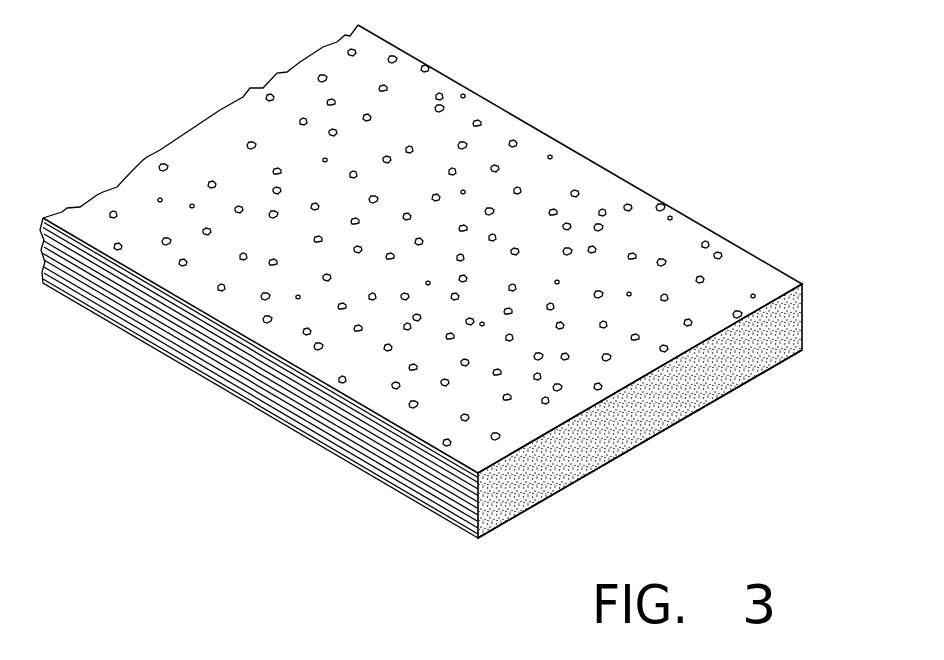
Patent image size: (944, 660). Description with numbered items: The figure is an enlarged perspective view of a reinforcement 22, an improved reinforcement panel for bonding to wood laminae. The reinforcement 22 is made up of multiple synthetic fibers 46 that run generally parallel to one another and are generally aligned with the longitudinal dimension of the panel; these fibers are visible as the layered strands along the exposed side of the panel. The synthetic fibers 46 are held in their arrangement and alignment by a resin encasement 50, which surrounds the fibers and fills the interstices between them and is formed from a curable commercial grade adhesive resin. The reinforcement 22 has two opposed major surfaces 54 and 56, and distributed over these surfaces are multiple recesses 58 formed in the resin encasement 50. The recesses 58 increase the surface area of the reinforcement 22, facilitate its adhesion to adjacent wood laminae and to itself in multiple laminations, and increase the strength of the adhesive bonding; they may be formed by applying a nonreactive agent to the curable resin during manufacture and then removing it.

The reinforcement 22 is at (562, 116).
The synthetic fibers 46 is at (287, 401).
The resin encasement 50 is at (802, 310).
The major surface 54 is at (627, 227).
The major surface 56 is at (772, 367).
The recesses 58 is at (223, 155).